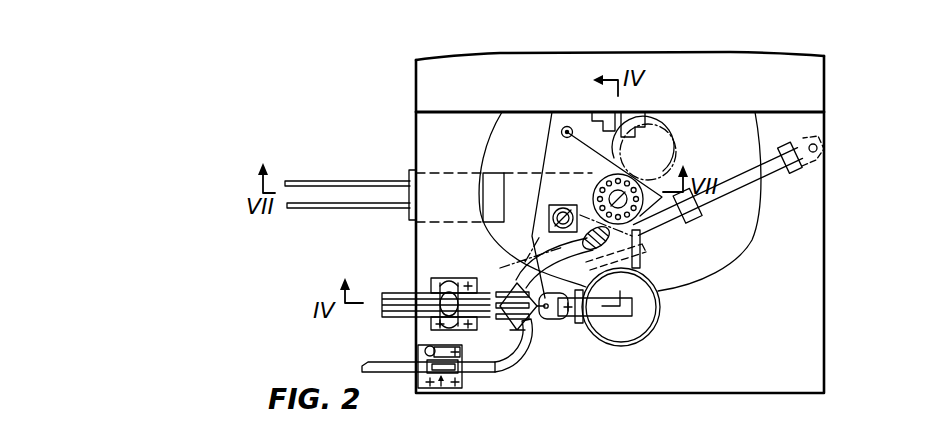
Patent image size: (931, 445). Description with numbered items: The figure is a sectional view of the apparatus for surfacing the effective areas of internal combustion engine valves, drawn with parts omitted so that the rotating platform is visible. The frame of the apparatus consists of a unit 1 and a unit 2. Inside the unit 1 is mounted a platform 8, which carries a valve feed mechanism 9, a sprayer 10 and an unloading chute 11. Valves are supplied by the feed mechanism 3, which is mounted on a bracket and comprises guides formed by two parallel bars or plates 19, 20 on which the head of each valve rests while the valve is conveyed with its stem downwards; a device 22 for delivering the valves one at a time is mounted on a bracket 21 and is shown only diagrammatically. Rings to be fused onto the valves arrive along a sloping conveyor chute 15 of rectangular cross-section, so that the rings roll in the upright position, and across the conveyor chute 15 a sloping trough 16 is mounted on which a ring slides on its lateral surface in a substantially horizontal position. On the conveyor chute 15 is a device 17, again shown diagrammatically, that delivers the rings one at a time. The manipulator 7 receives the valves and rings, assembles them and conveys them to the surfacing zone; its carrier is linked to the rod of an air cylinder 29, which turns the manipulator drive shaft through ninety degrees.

The unit 1 is at (818, 222).
The unit 2 is at (813, 81).
The feed mechanism 3 is at (411, 293).
The manipulator 7 is at (603, 336).
The platform 8 is at (564, 157).
The valve feed mechanism 9 is at (546, 236).
The sprayer 10 is at (650, 228).
The unloading chute 11 is at (521, 186).
The conveyor chute 15 is at (397, 373).
The trough 16 is at (490, 376).
The device 17 is at (440, 389).
The bar 19 is at (312, 208).
The bar 20 is at (312, 181).
The bracket 21 is at (433, 290).
The device 22 is at (447, 280).
The air cylinder 29 is at (712, 211).